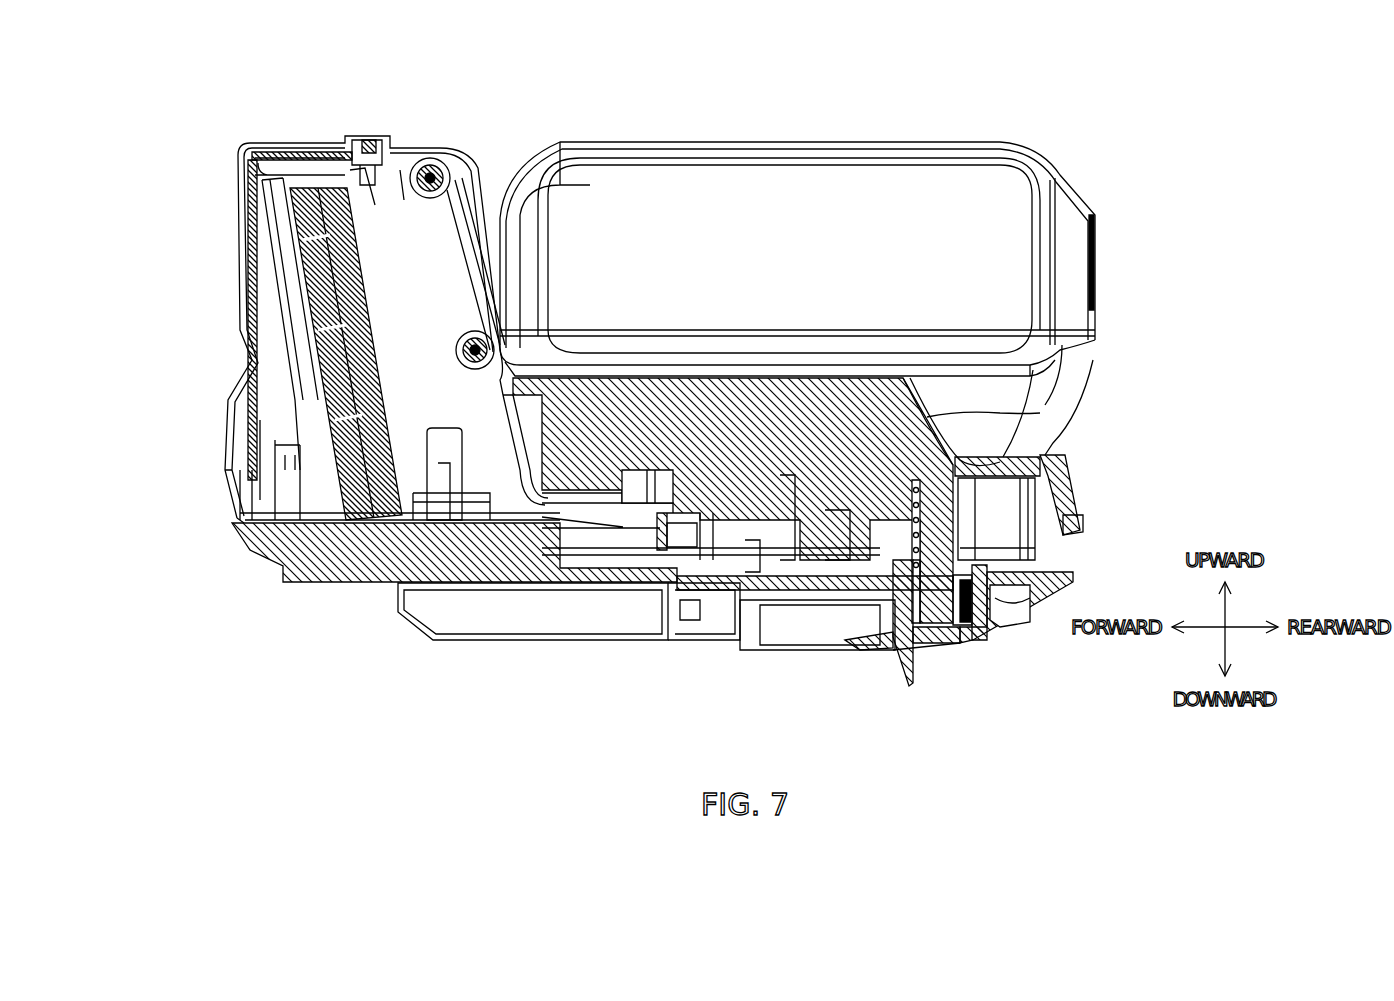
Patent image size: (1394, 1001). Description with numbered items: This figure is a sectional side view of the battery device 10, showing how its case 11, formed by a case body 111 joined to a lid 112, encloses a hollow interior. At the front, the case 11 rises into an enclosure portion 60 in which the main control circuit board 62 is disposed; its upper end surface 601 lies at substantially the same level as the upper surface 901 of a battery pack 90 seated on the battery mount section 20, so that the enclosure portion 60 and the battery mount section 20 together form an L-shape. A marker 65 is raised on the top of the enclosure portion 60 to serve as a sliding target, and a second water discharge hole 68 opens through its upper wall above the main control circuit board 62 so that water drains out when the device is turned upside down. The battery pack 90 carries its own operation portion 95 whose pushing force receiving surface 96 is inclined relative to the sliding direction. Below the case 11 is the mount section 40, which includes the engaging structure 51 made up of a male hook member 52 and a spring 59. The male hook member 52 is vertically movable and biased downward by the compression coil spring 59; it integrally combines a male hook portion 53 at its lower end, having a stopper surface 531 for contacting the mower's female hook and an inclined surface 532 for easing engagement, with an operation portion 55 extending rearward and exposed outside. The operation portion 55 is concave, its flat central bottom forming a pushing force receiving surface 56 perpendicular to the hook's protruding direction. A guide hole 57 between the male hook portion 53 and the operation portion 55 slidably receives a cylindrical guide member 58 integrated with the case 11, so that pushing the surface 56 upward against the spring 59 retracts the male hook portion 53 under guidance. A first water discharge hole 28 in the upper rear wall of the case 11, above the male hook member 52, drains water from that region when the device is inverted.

The battery device 10 is at (998, 90).
The case 11 is at (528, 505).
The case body 111 is at (240, 490).
The lid 112 is at (553, 556).
The battery mount section 20 is at (778, 376).
The first water discharge hole 28 is at (1022, 456).
The mount section 40 is at (620, 642).
The engaging structure 51 is at (958, 505).
The male hook member 52 is at (880, 648).
The male hook portion 53 is at (912, 679).
The stopper surface 531 is at (938, 655).
The inclined surface 532 is at (892, 678).
The operation portion 55 is at (1015, 610).
The pushing force receiving surface 56 is at (1020, 651).
The guide hole 57 is at (975, 640).
The cylindrical guide member 58 is at (940, 645).
The spring 59 is at (1076, 516).
The enclosure portion 60 is at (244, 180).
The upper end surface 601 is at (356, 140).
The main control circuit board 62 is at (305, 345).
The marker 65 is at (300, 150).
The second water discharge hole 68 is at (369, 140).
The battery pack 90 is at (1000, 205).
The upper surface 901 is at (647, 142).
The operation portion 95 is at (1042, 414).
The pushing force receiving surface 96 is at (1047, 405).